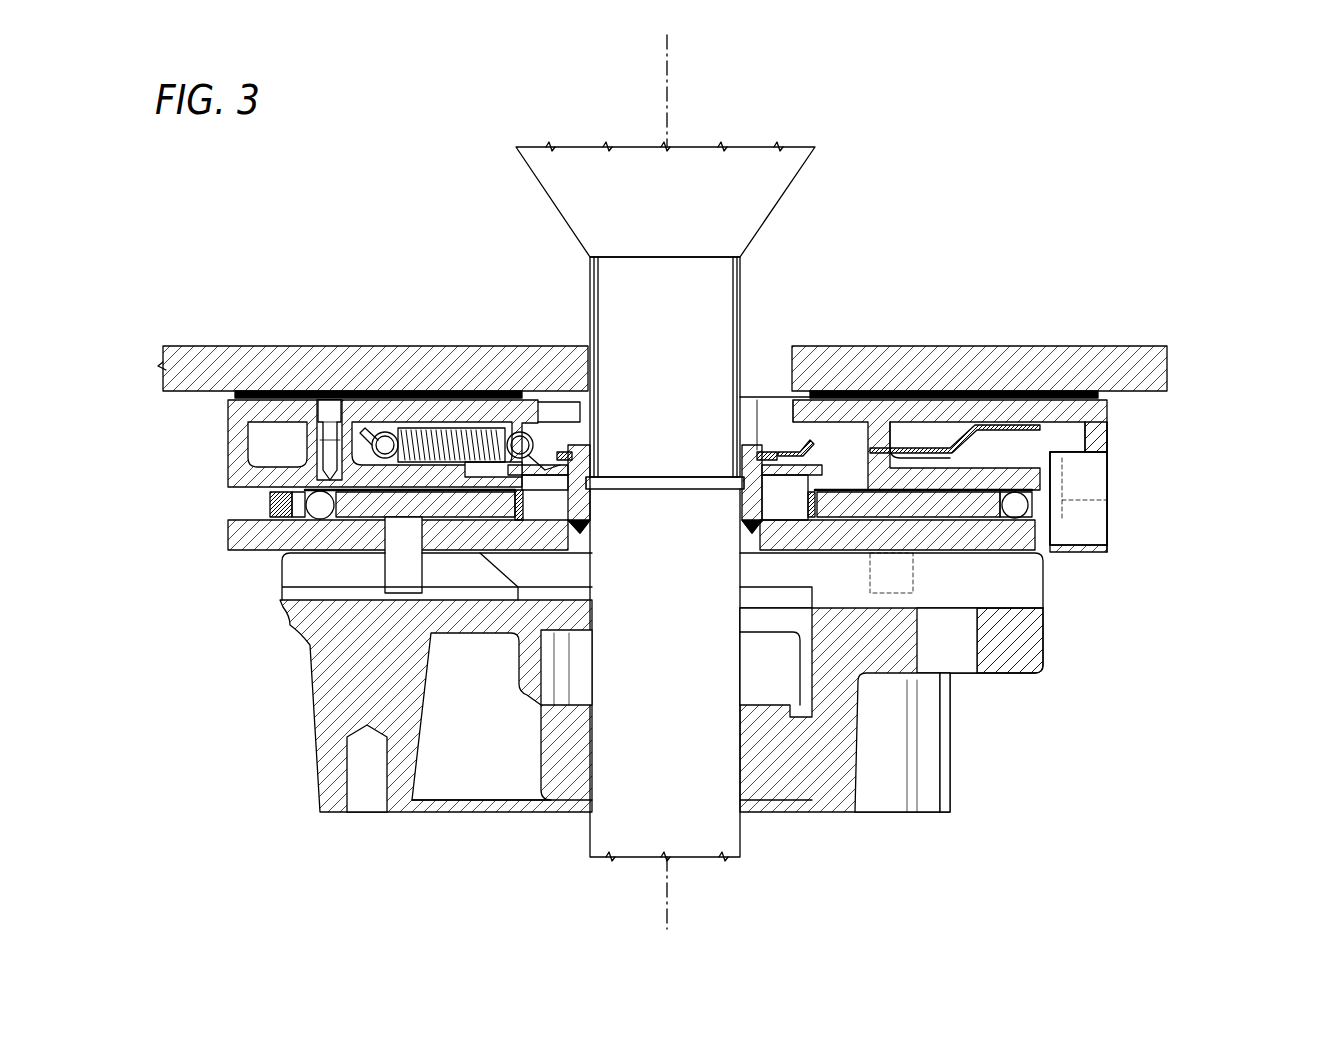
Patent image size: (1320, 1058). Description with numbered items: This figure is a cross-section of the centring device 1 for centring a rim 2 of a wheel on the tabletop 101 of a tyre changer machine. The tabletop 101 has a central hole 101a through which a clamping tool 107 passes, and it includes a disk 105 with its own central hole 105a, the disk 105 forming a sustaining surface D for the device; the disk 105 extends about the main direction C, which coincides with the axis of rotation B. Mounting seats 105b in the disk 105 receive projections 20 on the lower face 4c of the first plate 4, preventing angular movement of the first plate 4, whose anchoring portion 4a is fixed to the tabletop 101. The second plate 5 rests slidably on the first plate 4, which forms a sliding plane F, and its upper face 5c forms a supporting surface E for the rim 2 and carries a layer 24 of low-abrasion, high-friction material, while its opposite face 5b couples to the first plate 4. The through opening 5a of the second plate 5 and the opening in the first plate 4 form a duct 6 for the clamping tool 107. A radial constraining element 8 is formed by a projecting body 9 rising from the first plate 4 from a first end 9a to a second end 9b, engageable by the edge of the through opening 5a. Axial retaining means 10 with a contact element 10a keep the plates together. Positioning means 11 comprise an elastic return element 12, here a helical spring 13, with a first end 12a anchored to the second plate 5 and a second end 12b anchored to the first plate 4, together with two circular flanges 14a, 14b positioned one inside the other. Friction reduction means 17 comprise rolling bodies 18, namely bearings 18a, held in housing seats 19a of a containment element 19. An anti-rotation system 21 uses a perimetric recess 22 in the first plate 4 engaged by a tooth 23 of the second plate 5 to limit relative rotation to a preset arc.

The centring device 1 is at (1133, 464).
The rim 2 is at (1098, 356).
The first plate 4 is at (240, 535).
The anchoring portion 4a is at (740, 503).
The face of the first plate 4c is at (1043, 555).
The second plate 5 is at (1112, 423).
The through opening 5a is at (770, 402).
The face of the second plate 5b is at (927, 490).
The upper face 5c is at (1038, 398).
The duct 6 is at (570, 400).
The radial constraining element 8 is at (563, 580).
The projecting body 9 is at (580, 445).
The first end 9a is at (752, 517).
The second end 9b is at (760, 412).
The axial retaining means 10 is at (560, 443).
The contact element 10a is at (782, 452).
The positioning means 11 is at (327, 423).
The elastic return element 12 is at (383, 427).
The first end of elastic return element 12a is at (362, 436).
The second end of elastic return element 12b is at (518, 430).
The helical spring 13 is at (412, 437).
The circular flange 14a is at (975, 440).
The circular flange 14b is at (808, 447).
The friction reduction means 17 is at (965, 512).
The rolling bodies 18 is at (1008, 505).
The bearings 18a is at (268, 503).
The containment element 19 is at (922, 512).
The housing seats 19a is at (300, 525).
The projections 20 is at (290, 634).
The anti-rotation system 21 is at (1113, 489).
The perimetric recess 22 is at (1095, 479).
The tooth 23 is at (1100, 442).
The layer 24 is at (1100, 394).
The tabletop 101 is at (305, 684).
The central hole 101a is at (581, 618).
The disk 105 is at (305, 727).
The central hole of the disk 105a is at (591, 600).
The mounting seats 105b is at (449, 580).
The clamping tool 107 is at (700, 262).
The axis of rotation B is at (668, 88).
The main direction C is at (668, 890).
The sustaining surface D is at (303, 553).
The supporting surface E is at (235, 396).
The sliding plane F is at (262, 493).